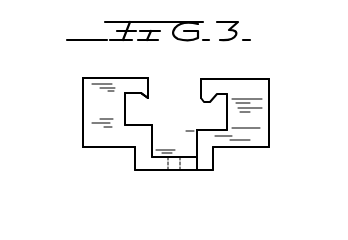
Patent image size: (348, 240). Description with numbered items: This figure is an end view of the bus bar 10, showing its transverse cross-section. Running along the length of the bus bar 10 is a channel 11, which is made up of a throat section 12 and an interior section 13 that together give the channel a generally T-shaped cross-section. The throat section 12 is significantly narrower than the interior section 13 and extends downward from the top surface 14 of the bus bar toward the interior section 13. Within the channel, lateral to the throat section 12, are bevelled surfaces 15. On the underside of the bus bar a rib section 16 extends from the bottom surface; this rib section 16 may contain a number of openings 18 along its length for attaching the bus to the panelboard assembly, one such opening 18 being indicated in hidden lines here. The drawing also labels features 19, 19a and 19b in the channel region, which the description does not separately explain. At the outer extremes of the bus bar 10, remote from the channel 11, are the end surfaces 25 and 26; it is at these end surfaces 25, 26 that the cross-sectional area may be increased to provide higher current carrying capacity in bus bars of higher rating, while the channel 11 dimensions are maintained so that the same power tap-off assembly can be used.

The bus bar 10 is at (281, 93).
The channel 11 is at (215, 120).
The throat section 12 is at (170, 96).
The interior section 13 is at (197, 170).
The top surface 14 is at (97, 77).
The bevelled surfaces 15 is at (140, 102).
The rib section 16 is at (142, 167).
The openings 18 is at (174, 170).
The notch 19 is at (152, 92).
The upper corner of block 19a is at (196, 78).
The lower notch wall 19b is at (126, 121).
The end surface 25 is at (82, 105).
The end surface 26 is at (271, 121).